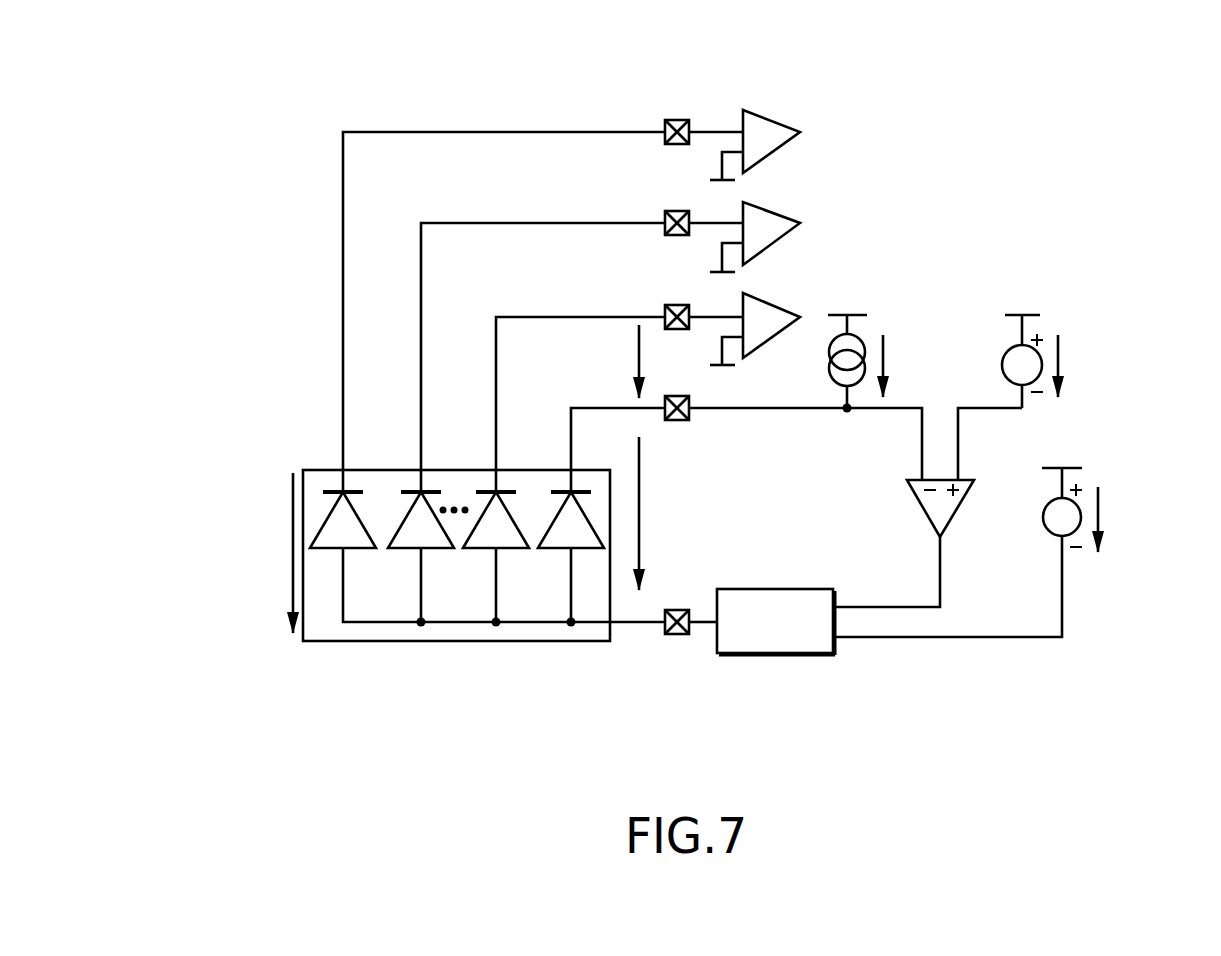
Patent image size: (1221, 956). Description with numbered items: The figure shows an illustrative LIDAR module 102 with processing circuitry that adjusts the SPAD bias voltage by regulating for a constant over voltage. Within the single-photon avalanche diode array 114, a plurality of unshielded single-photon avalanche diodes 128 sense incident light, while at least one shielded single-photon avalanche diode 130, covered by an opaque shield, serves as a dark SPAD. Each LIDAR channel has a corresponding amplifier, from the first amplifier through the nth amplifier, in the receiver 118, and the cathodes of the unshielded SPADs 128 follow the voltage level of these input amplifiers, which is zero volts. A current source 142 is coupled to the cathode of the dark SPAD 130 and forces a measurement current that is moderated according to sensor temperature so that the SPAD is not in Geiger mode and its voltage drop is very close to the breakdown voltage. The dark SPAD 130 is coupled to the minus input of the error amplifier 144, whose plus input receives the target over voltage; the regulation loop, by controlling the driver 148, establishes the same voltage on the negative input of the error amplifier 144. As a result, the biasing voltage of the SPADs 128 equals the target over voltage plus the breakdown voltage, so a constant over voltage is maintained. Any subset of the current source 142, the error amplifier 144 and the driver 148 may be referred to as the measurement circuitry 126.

The photodetector receiver circuit 102 is at (240, 268).
The single-photon avalanche diode array 114 is at (316, 470).
The receiver 118 is at (826, 109).
The measurement circuitry 126 is at (945, 298).
The unshielded single-photon avalanche diodes 128 is at (510, 648).
The shielded single-photon avalanche diode 130 is at (602, 648).
The current source 142 is at (855, 298).
The error amplifier 144 is at (1016, 455).
The driver 148 is at (775, 653).